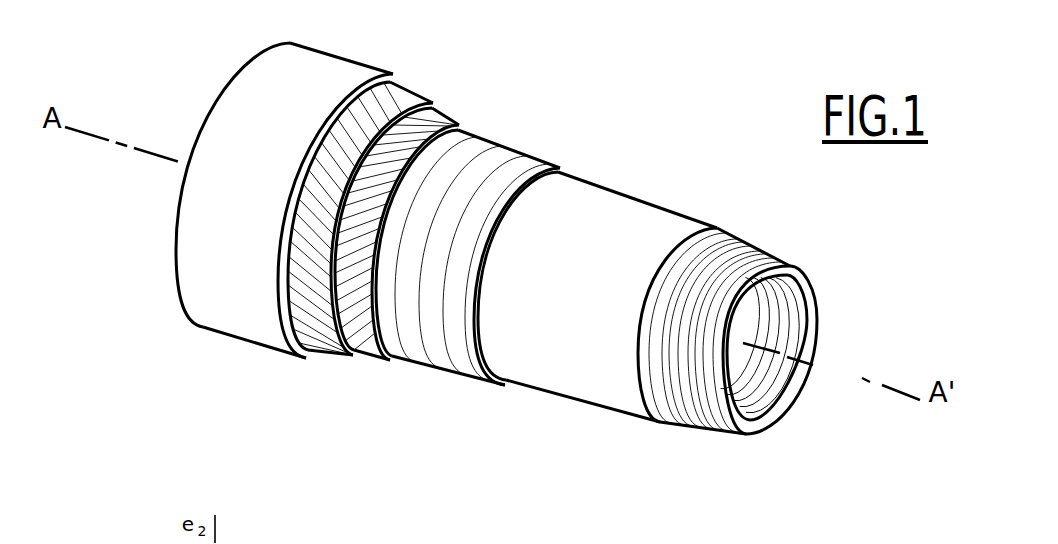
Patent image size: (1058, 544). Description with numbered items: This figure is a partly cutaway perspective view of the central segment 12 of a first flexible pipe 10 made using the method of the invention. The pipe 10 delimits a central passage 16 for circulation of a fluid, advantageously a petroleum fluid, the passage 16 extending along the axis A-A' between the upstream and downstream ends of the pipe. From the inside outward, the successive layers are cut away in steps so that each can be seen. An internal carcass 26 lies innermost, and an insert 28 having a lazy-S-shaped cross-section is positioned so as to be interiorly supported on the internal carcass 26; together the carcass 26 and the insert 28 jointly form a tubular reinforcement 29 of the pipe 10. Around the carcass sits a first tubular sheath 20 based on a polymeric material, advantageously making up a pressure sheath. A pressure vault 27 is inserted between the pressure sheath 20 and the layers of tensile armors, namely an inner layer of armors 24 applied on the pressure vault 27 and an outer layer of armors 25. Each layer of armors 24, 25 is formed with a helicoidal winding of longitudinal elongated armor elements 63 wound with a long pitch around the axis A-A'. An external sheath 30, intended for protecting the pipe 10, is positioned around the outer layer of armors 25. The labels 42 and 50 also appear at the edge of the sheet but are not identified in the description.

The flexible pipe 10 is at (716, 92).
The central segment 12 is at (527, 107).
The central passage 16 is at (777, 317).
The first tubular sheath 20 is at (627, 237).
The inner layer of armors 24 is at (423, 125).
The outer layer of armors 25 is at (378, 117).
The internal carcass 26 is at (747, 283).
The pressure vault 27 is at (500, 170).
The insert 28 is at (777, 400).
The tubular reinforcement 29 is at (688, 462).
The external sheath 30 is at (306, 93).
The elongated armor element 63 is at (352, 310).
The element 42 is at (278, 543).
The element 50 is at (375, 534).